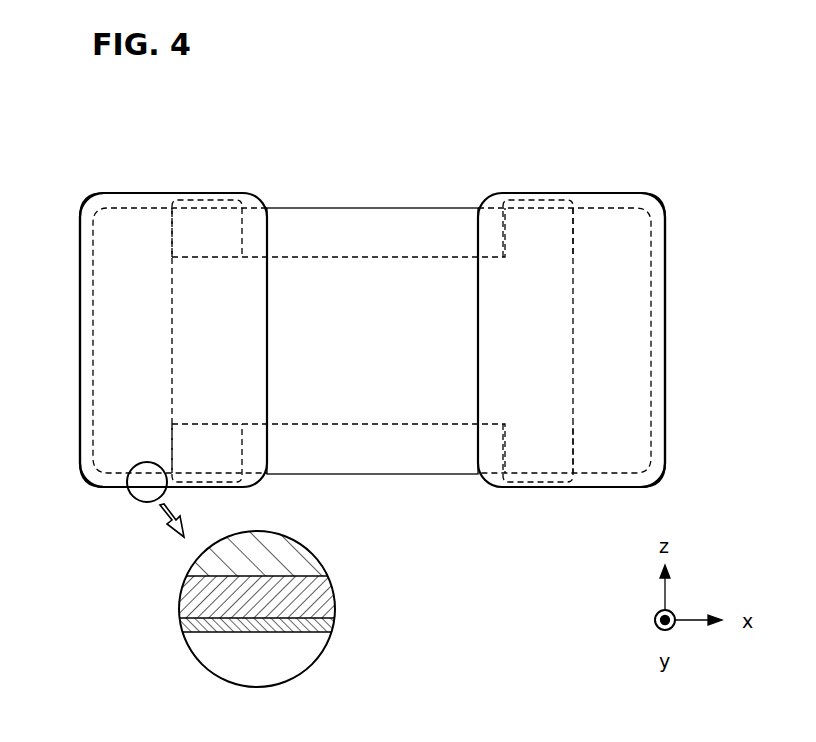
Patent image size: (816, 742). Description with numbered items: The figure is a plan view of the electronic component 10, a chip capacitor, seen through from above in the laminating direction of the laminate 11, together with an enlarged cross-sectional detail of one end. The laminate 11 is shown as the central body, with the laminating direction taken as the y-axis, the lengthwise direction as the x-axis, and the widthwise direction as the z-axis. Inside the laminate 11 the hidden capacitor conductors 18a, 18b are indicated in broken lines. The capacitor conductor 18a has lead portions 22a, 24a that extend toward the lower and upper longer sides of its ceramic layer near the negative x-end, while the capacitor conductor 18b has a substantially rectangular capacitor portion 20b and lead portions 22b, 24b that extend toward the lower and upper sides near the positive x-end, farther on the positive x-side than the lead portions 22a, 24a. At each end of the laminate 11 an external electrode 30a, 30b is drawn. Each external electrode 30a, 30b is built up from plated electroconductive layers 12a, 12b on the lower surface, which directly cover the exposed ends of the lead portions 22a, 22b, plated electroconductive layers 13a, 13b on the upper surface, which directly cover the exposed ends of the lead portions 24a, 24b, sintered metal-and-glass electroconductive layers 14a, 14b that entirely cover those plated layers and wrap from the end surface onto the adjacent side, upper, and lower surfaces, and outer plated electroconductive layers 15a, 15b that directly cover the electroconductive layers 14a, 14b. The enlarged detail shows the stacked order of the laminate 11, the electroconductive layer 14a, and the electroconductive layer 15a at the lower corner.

The electronic component 10 is at (78, 147).
The laminate 11 is at (376, 206).
The electroconductive layer 12a is at (197, 497).
The electroconductive layer 12b is at (532, 497).
The electroconductive layer 13a is at (228, 198).
The electroconductive layer 13b is at (530, 197).
The electroconductive layer 14a is at (118, 193).
The electroconductive layer 14b is at (597, 193).
The electroconductive layer 15a is at (155, 315).
The electroconductive layer 15b is at (648, 315).
The capacitor conductor 18a is at (170, 232).
The capacitor conductor 18b is at (575, 333).
The capacitor portion 20b is at (193, 397).
The lead portion 22a is at (223, 447).
The lead portion 22b is at (558, 438).
The lead portion 24a is at (223, 232).
The lead portion 24b is at (558, 237).
The external electrode 30a is at (77, 223).
The external electrode 30b is at (670, 236).